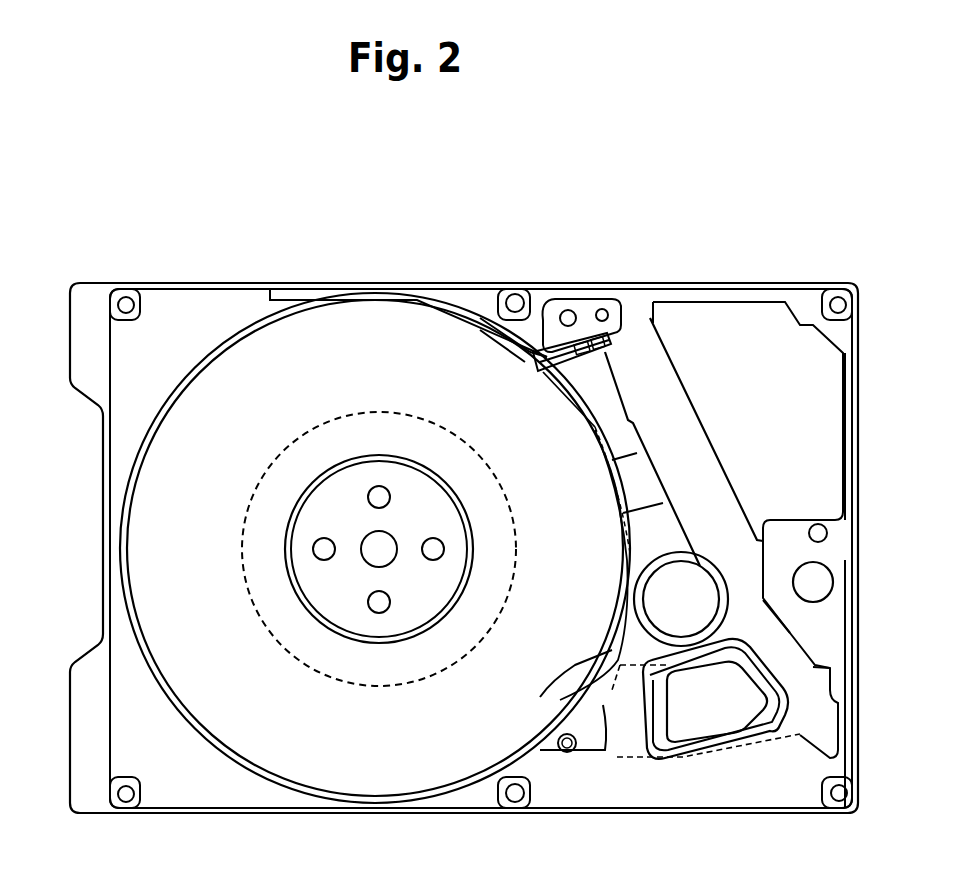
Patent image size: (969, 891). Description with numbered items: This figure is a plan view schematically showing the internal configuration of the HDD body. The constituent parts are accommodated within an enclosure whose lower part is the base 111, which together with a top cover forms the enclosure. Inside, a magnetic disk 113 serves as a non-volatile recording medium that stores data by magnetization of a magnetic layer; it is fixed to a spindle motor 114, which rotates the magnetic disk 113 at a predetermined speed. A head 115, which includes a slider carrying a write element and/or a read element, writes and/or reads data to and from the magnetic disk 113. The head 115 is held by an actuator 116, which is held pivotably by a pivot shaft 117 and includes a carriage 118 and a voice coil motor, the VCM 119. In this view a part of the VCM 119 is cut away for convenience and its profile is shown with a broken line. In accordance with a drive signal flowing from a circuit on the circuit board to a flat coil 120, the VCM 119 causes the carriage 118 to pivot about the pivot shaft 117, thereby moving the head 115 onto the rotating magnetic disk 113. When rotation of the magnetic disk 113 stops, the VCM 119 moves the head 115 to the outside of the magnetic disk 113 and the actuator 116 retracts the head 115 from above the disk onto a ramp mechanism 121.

The base 111 is at (143, 757).
The magnetic disk 113 is at (350, 775).
The spindle motor 114 is at (268, 531).
The head 115 is at (600, 365).
The actuator 116 is at (740, 578).
The pivot shaft 117 is at (663, 604).
The carriage 118 is at (698, 540).
The VCM (voice coil motor) 119 is at (692, 768).
The flat coil 120 is at (738, 730).
The ramp mechanism 121 is at (550, 300).